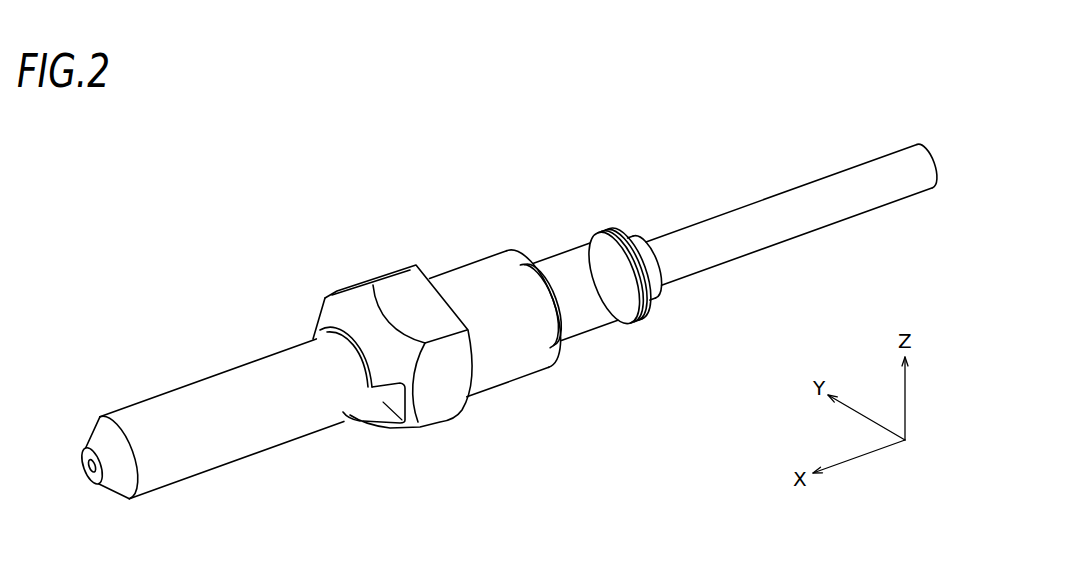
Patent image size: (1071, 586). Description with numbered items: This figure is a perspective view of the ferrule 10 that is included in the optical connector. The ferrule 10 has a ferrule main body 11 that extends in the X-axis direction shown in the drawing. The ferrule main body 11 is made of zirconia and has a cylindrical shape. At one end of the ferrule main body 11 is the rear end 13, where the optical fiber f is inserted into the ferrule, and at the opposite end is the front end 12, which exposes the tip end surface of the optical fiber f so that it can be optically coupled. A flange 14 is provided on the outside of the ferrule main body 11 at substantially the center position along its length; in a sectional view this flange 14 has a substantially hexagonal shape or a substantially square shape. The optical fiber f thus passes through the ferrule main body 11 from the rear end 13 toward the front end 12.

The ferrule 10 is at (267, 240).
The ferrule main body 11 is at (230, 458).
The front end 12 is at (81, 466).
The rear end 13 is at (572, 264).
The flange 14 is at (450, 430).
The optical fiber f is at (820, 180).